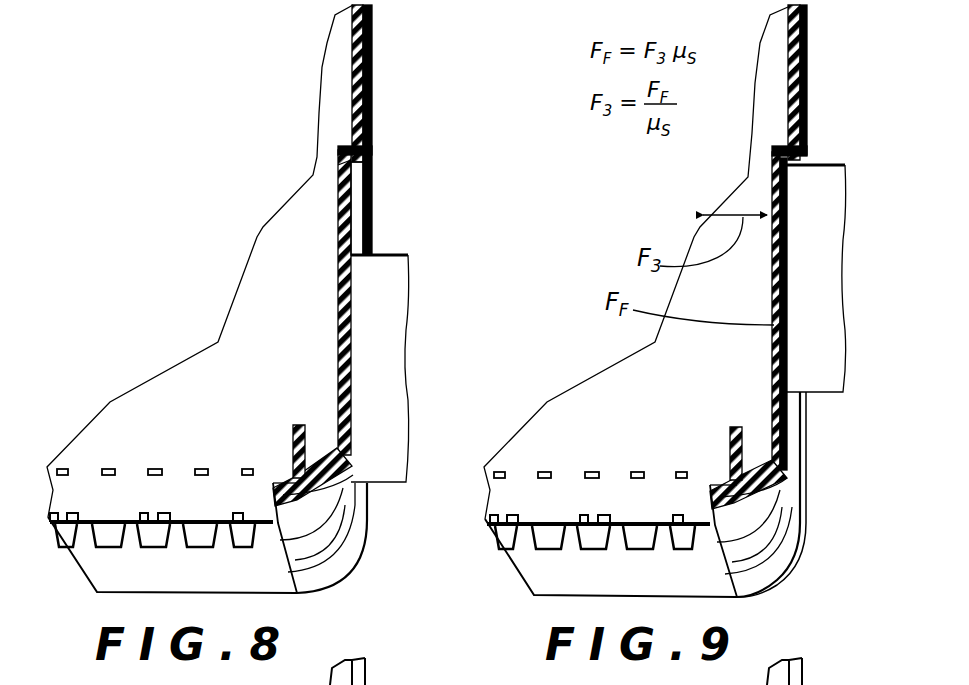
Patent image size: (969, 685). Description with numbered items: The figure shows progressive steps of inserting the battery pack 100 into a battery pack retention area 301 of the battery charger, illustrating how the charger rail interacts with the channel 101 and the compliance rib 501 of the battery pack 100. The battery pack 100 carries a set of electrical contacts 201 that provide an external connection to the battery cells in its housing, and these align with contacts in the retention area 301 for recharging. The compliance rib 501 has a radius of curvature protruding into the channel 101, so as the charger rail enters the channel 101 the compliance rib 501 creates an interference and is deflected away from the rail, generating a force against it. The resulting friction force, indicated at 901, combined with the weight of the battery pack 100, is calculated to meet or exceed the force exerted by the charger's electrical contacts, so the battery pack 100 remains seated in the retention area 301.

In FIG. 8, the battery pack 100 is at (336, 73).
In FIG. 9, the battery pack 100 is at (674, 262).
In FIG. 8, the channel 101 is at (360, 203).
In FIG. 8, the electrical contacts 201 is at (108, 540).
In FIG. 9, the electrical contacts 201 is at (604, 544).
In FIG. 8, the battery pack retention area 301 is at (380, 295).
In FIG. 9, the battery pack retention area 301 is at (842, 259).
In FIG. 8, the compliance rib 501 is at (346, 193).
In FIG. 9, the gap 901 is at (715, 192).